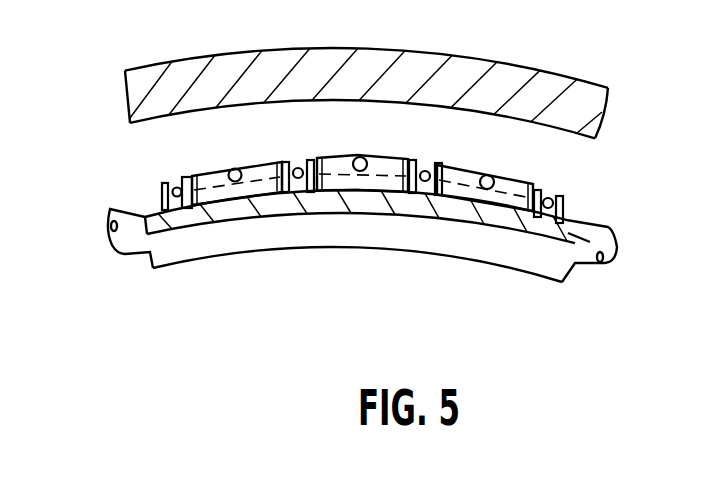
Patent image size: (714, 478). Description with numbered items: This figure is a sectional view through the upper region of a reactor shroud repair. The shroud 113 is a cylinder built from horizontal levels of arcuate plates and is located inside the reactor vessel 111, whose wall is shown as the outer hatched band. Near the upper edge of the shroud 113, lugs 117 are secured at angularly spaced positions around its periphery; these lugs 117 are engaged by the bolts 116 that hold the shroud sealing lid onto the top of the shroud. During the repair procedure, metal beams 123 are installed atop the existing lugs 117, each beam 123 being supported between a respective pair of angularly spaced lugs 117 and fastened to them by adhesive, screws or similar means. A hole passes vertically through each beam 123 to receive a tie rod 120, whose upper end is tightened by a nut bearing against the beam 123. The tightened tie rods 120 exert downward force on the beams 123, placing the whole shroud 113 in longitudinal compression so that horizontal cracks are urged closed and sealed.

The reactor vessel 111 is at (562, 88).
The shroud 113 is at (505, 268).
The bolts 116 is at (552, 199).
The lugs 117 is at (565, 205).
The tie rods 120 is at (489, 175).
The metal beams 123 is at (463, 170).